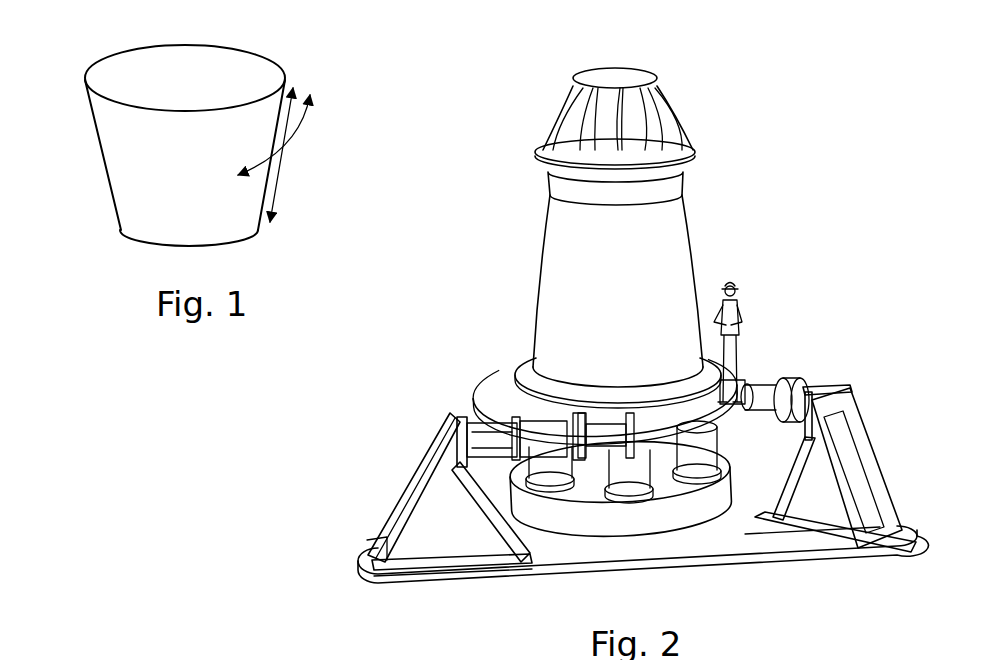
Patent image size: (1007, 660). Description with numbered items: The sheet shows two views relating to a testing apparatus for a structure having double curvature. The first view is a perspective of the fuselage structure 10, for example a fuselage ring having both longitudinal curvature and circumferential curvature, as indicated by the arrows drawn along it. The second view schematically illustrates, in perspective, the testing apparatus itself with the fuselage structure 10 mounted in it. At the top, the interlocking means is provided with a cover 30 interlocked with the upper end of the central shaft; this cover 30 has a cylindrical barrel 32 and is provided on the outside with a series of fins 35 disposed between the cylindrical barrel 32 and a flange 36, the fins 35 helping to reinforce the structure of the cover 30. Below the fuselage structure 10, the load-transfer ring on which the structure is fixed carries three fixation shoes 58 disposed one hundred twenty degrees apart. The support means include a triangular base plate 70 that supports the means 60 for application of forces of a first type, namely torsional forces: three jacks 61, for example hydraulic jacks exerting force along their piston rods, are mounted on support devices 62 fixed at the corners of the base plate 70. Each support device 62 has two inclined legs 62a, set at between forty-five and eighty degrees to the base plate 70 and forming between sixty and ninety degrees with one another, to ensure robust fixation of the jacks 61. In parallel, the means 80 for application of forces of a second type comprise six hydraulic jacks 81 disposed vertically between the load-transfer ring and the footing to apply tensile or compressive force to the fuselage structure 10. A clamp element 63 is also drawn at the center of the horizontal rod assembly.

In FIG. 1, the fuselage structure 10 is at (123, 260).
In FIG. 2, the fuselage structure 10 is at (678, 252).
In FIG. 2, the cover 30 is at (635, 103).
In FIG. 2, the cylindrical barrel 32 is at (640, 98).
In FIG. 2, the fins 35 is at (672, 136).
In FIG. 2, the flange 36 is at (688, 162).
In FIG. 2, the fixation shoes 58 is at (675, 425).
In FIG. 2, the means for application of forces of a first type 60 is at (612, 389).
In FIG. 2, the jacks 61 is at (477, 410).
In FIG. 2, the support devices 62 is at (622, 492).
In FIG. 2, the legs 62a is at (395, 520).
In FIG. 2, the central clamp 63 is at (592, 435).
In FIG. 2, the base plate 70 is at (625, 560).
In FIG. 2, the means for application of forces of a second type 80 is at (713, 542).
In FIG. 2, the hydraulic jacks 81 is at (705, 452).